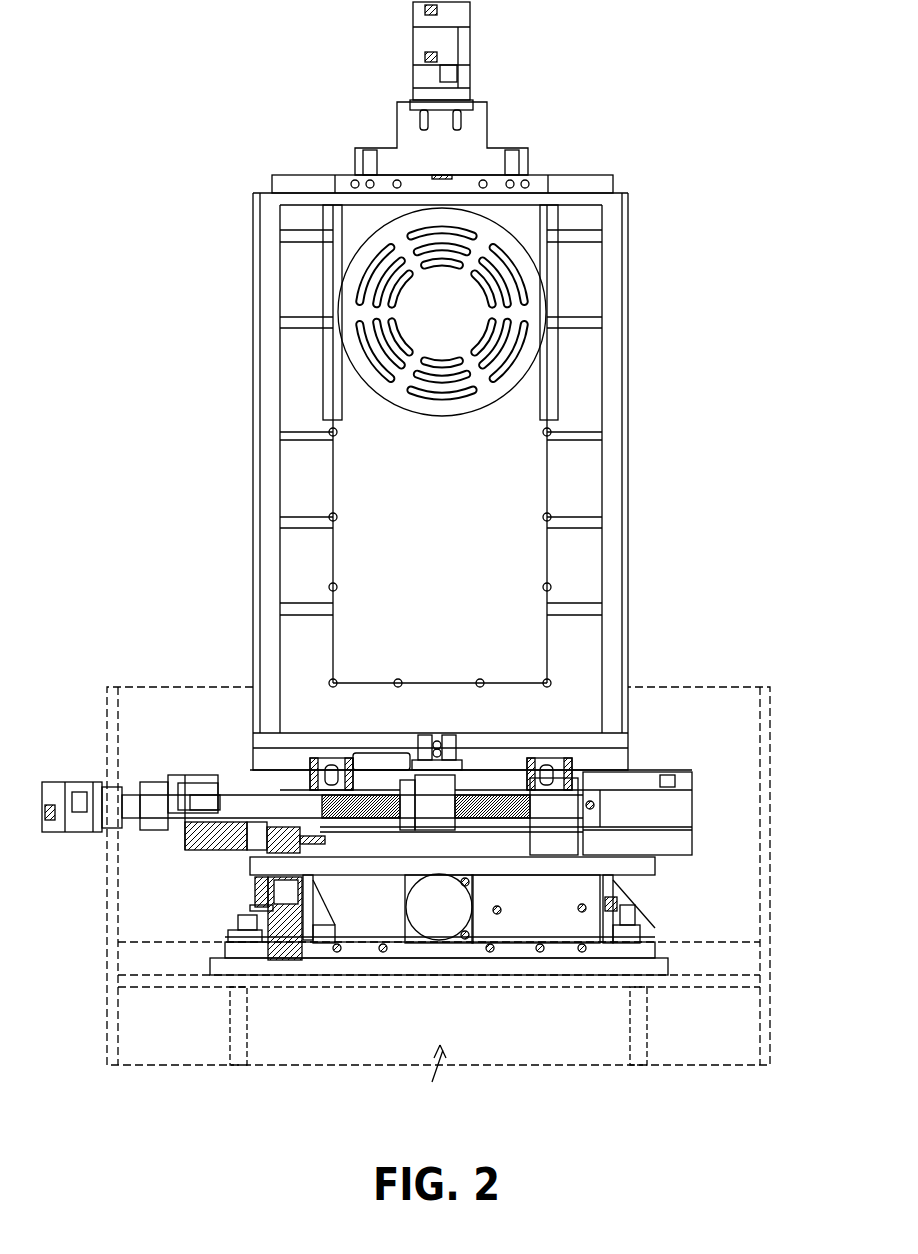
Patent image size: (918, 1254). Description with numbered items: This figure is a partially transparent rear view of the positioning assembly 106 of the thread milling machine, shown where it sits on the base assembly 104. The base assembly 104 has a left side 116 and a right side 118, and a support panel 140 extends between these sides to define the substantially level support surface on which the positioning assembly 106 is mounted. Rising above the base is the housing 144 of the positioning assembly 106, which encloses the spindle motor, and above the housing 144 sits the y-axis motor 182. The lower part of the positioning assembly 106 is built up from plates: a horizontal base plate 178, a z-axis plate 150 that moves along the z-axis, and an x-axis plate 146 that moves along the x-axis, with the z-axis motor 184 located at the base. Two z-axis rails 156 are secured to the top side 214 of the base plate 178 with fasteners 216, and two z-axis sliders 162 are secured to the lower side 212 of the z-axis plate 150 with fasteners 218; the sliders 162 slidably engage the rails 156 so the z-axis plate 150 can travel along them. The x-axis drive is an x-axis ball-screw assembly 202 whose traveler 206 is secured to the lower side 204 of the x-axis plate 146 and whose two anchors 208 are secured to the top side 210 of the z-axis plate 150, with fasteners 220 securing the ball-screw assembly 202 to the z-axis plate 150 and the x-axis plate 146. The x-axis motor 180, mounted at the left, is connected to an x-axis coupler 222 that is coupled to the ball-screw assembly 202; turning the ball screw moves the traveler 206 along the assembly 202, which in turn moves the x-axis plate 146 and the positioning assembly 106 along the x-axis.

The base assembly 104 is at (708, 686).
The positioning assembly 106 is at (200, 462).
The left side 116 is at (107, 1012).
The right side 118 is at (772, 752).
The support panel 140 is at (712, 980).
The housing 144 is at (588, 182).
The x-axis plate 146 is at (627, 743).
The z-axis plate 150 is at (190, 858).
The z-axis rails 156 is at (327, 930).
The z-axis sliders 162 is at (313, 902).
The horizontal base plate 178 is at (272, 960).
The x-axis motor 180 is at (43, 835).
The y-axis motor 182 is at (460, 36).
The z-axis motor 184 is at (433, 965).
The x-axis ball-screw assembly 202 is at (518, 827).
The lower side of the x-axis plate 204 is at (357, 760).
The traveler 206 is at (452, 838).
The anchors 208 is at (292, 782).
The top side of the z-axis plate 210 is at (210, 803).
The lower side of the z-axis plate 212 is at (676, 852).
The top side of the base plate 214 is at (253, 905).
The fasteners 216 is at (290, 957).
The fasteners 218 is at (315, 840).
The fasteners 220 is at (455, 735).
The x-axis coupler 222 is at (158, 790).